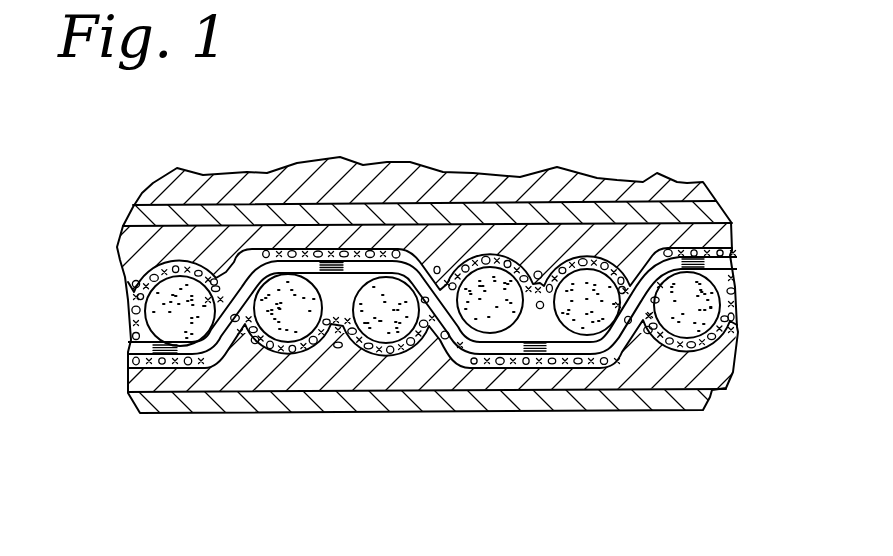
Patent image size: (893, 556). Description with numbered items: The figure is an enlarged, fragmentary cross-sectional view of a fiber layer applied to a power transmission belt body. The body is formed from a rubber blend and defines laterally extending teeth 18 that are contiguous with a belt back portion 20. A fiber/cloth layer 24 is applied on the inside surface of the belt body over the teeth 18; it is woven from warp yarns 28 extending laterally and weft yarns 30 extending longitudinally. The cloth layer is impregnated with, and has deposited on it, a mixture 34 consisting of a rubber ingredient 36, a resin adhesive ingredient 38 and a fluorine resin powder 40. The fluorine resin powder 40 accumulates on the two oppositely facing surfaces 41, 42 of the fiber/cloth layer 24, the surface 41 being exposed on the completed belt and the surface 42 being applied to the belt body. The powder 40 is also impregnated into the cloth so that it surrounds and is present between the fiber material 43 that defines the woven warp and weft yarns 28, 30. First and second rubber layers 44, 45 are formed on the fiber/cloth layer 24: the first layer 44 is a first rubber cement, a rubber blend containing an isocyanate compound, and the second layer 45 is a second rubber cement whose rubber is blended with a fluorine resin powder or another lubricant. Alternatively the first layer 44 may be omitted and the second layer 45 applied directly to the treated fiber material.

The teeth 18 is at (427, 243).
The belt back portion 20 is at (531, 178).
The fiber/cloth layer 24 is at (493, 306).
The warp yarns 28 is at (722, 262).
The weft yarns 30 is at (815, 255).
The mixture 34 is at (333, 435).
The rubber ingredient 36 is at (373, 343).
The resin adhesive ingredient 38 is at (388, 345).
The fluorine resin powder 40 is at (343, 325).
The surface 41 is at (697, 353).
The surface 42 is at (697, 252).
The fiber material 43 is at (668, 282).
The first rubber layer 44 is at (517, 235).
The second rubber layer 45 is at (718, 212).